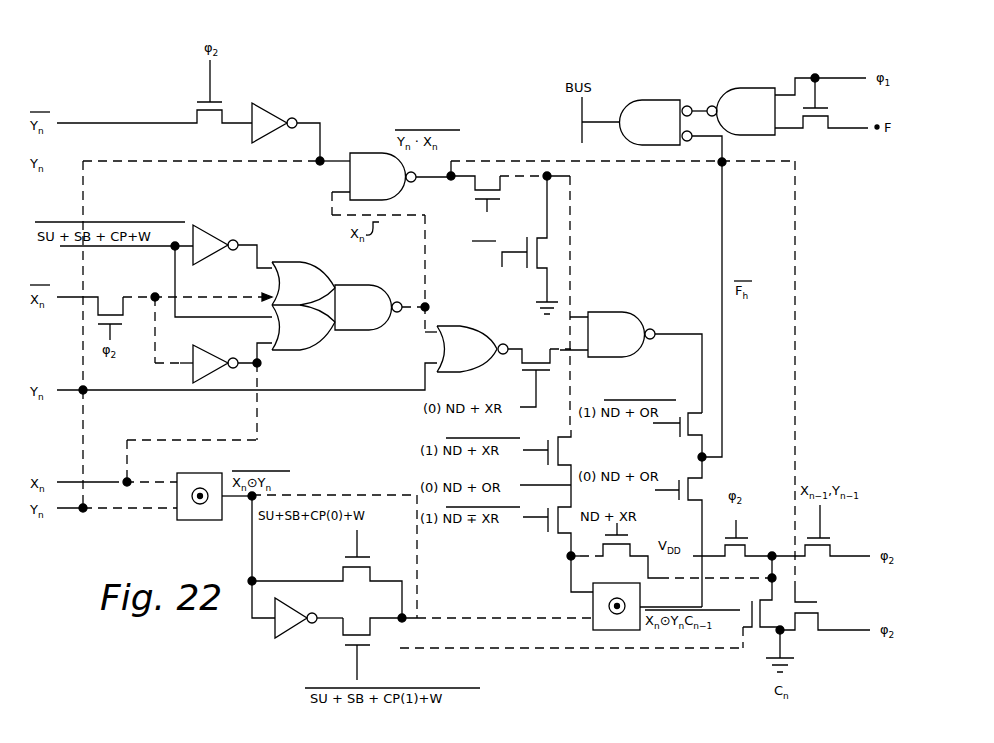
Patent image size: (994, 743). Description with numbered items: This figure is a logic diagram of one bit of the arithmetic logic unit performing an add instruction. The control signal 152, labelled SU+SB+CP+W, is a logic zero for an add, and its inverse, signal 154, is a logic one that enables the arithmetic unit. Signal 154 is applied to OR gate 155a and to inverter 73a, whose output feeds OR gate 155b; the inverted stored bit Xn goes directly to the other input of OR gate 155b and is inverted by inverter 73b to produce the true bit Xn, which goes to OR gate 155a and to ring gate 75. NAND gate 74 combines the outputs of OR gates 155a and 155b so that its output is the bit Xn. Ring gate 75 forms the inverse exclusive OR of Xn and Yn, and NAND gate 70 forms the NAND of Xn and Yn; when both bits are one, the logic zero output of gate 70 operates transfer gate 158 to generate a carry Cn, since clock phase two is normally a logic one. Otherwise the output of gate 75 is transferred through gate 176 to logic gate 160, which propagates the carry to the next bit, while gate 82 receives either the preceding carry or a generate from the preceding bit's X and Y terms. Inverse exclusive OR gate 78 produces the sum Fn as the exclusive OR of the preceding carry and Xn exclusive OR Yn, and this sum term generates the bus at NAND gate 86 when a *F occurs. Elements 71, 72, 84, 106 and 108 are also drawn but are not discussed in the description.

The NAND gate 70 is at (369, 165).
The transistor logic block 71 is at (573, 228).
The NAND gate 72 is at (677, 333).
The inverter 73a is at (207, 237).
The inverter 73b is at (207, 357).
The NAND gate 74 is at (361, 296).
The ring gate 75 is at (198, 518).
The inverse exclusive OR gate 78 is at (617, 632).
The gate 82 is at (771, 553).
The AND gate 84 is at (655, 100).
The NAND gate 86 is at (745, 92).
The transistor 106 is at (826, 112).
The conductor line 108 is at (731, 296).
The control signal 152 is at (348, 549).
The inverse control signal 154 is at (358, 660).
The OR gate 155a is at (305, 343).
The OR gate 155b is at (298, 270).
The transfer gate 158 is at (800, 590).
The logic gate 160 is at (762, 633).
The gate 176 is at (354, 626).